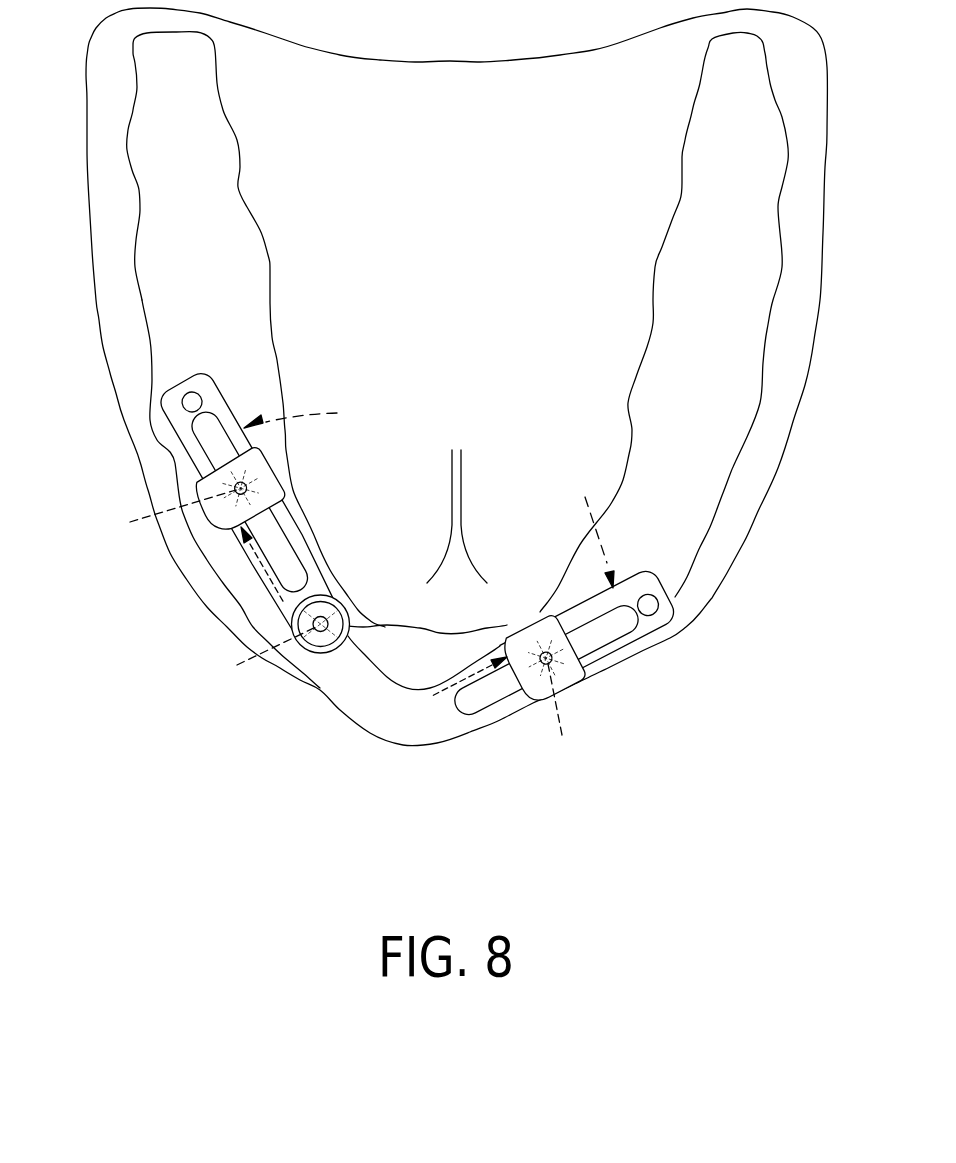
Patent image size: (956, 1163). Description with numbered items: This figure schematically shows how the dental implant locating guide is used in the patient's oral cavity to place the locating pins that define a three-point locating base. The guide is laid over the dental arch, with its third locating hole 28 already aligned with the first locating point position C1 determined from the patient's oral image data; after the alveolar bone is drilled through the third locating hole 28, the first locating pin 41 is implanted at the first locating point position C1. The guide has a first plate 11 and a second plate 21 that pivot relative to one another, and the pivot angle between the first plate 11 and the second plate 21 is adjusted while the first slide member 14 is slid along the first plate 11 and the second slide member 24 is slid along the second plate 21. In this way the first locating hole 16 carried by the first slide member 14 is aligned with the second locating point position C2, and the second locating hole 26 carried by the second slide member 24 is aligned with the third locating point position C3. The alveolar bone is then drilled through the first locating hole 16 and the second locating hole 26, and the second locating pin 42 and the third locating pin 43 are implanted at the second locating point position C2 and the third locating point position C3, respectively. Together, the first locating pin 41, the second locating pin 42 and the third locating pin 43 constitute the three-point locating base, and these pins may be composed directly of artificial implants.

The first plate 11 is at (193, 440).
The first slide member 14 is at (220, 510).
The first locating hole 16 is at (247, 483).
The second plate 21 is at (617, 648).
The second slide member 24 is at (572, 684).
The second locating hole 26 is at (545, 652).
The third locating hole 28 is at (387, 625).
The first locating pin 41 is at (326, 616).
The second locating pin 42 is at (240, 495).
The third locating pin 43 is at (530, 695).
The first locating point position C1 is at (258, 660).
The second locating point position C2 is at (160, 517).
The third locating point position C3 is at (565, 719).